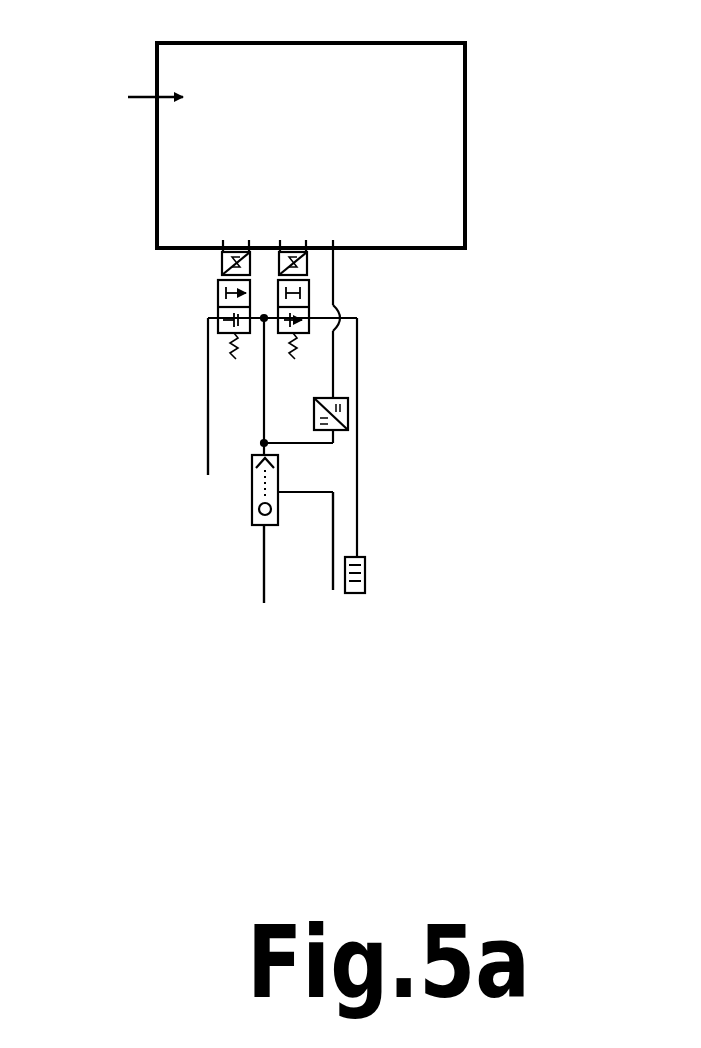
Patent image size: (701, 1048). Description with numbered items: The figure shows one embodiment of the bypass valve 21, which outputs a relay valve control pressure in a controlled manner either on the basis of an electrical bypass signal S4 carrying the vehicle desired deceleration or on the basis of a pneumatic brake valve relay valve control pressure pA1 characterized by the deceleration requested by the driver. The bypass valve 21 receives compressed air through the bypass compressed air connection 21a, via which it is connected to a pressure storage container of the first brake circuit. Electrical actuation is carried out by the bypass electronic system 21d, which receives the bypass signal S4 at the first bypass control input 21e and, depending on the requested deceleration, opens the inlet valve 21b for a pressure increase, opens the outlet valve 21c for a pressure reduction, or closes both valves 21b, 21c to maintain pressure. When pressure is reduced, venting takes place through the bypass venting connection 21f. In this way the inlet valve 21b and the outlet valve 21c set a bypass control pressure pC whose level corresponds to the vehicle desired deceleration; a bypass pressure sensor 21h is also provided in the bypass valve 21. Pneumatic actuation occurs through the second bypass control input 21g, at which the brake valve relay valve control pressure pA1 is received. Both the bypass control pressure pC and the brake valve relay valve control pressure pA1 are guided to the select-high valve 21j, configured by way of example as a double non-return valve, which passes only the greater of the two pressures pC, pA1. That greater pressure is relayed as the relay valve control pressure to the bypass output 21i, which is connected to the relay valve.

The bypass valve 21 is at (472, 318).
The first bypass control input 21e is at (157, 88).
The bypass signal S4 is at (148, 103).
The inlet valve 21b is at (237, 262).
The outlet valve 21c is at (297, 262).
The bypass electronic system 21d is at (155, 252).
The bypass pressure sensor 21h is at (348, 407).
The bypass control pressure pC is at (264, 404).
The bypass compressed air connection 21a is at (207, 465).
The select-high valve 21j is at (252, 512).
The second bypass control input 21g is at (262, 556).
The brake valve relay valve control pressure pA1 is at (262, 566).
The bypass output 21i is at (332, 583).
The bypass venting connection 21f is at (365, 595).